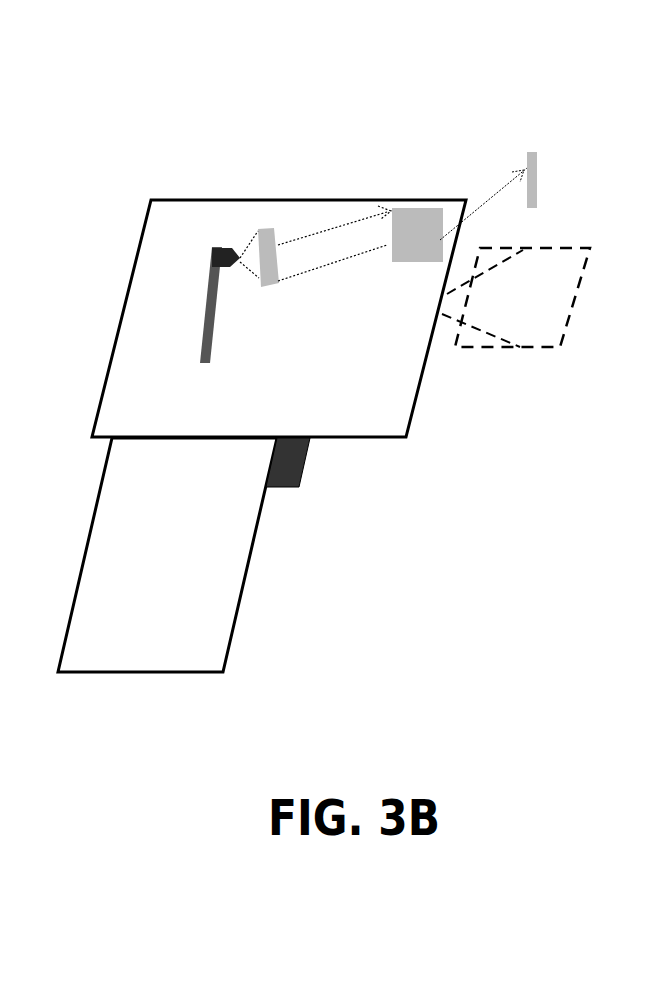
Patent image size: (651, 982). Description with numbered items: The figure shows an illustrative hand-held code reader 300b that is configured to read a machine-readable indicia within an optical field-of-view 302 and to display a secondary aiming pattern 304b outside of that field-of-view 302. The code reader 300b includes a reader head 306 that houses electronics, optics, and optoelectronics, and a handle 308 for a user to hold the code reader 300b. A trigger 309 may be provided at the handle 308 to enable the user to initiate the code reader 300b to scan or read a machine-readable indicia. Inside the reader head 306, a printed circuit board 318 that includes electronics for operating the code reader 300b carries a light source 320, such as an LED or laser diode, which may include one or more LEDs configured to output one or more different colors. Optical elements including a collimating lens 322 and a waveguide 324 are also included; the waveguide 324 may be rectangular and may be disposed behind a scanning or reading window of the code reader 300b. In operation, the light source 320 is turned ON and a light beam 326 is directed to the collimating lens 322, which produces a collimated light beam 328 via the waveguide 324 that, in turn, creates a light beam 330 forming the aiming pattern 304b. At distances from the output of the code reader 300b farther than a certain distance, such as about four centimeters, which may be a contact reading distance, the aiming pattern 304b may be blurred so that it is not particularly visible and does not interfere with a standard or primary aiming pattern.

The hand-held code reader 300b is at (382, 56).
The optical field-of-view 302 is at (542, 338).
The secondary aiming pattern 304b is at (540, 160).
The reader head 306 is at (135, 243).
The handle 308 is at (82, 547).
The trigger 309 is at (305, 485).
The printed circuit board 318 is at (209, 297).
The light source 320 is at (227, 257).
The collimating lens 322 is at (273, 238).
The waveguide 324 is at (412, 205).
The light beam 326 is at (248, 275).
The collimated light beam 328 is at (328, 263).
The light beam 330 is at (502, 182).